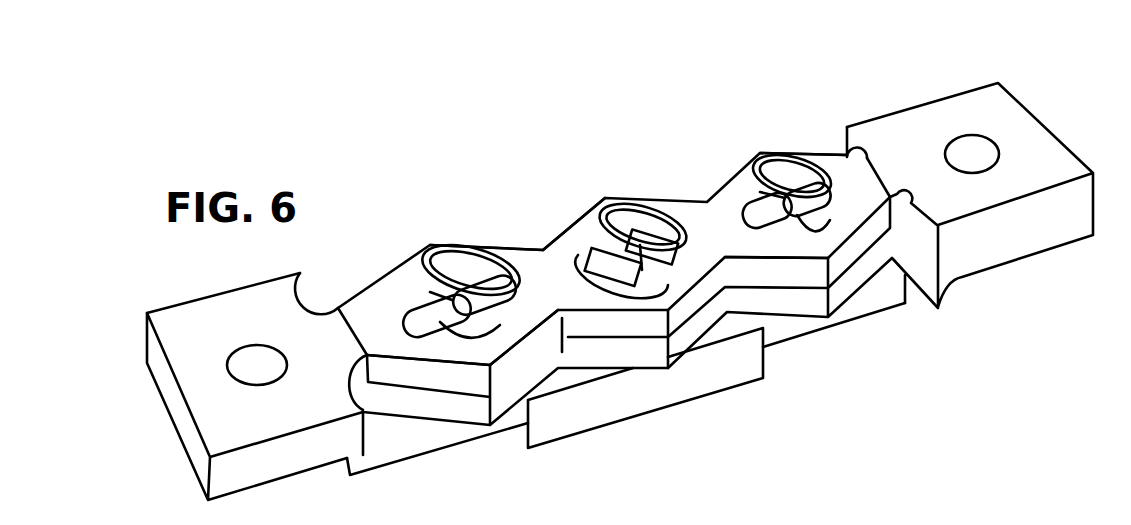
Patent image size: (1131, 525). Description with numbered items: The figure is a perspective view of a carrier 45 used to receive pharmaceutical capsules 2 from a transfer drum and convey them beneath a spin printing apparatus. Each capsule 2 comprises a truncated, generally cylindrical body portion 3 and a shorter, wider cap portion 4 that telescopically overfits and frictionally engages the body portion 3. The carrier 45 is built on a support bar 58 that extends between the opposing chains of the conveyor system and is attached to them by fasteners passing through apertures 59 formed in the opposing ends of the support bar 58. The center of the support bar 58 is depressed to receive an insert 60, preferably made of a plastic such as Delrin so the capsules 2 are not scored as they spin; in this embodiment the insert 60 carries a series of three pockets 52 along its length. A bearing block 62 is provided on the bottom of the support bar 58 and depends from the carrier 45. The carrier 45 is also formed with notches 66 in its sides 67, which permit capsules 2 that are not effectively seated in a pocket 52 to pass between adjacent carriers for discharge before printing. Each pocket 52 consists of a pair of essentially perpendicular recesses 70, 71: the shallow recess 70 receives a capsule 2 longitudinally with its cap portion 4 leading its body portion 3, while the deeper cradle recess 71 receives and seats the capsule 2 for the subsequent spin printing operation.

The carrier 45 is at (211, 263).
The support bar 58 is at (333, 316).
The aperture 59 is at (252, 352).
The notch 66 is at (360, 288).
The side 67 is at (488, 248).
The insert 60 is at (553, 270).
The bearing block 62 is at (642, 400).
The pocket 52 is at (445, 242).
The capsule 2 is at (422, 293).
The body portion 3 is at (533, 252).
The cap portion 4 is at (408, 321).
The recess 70 is at (603, 196).
The recess 71 is at (690, 248).